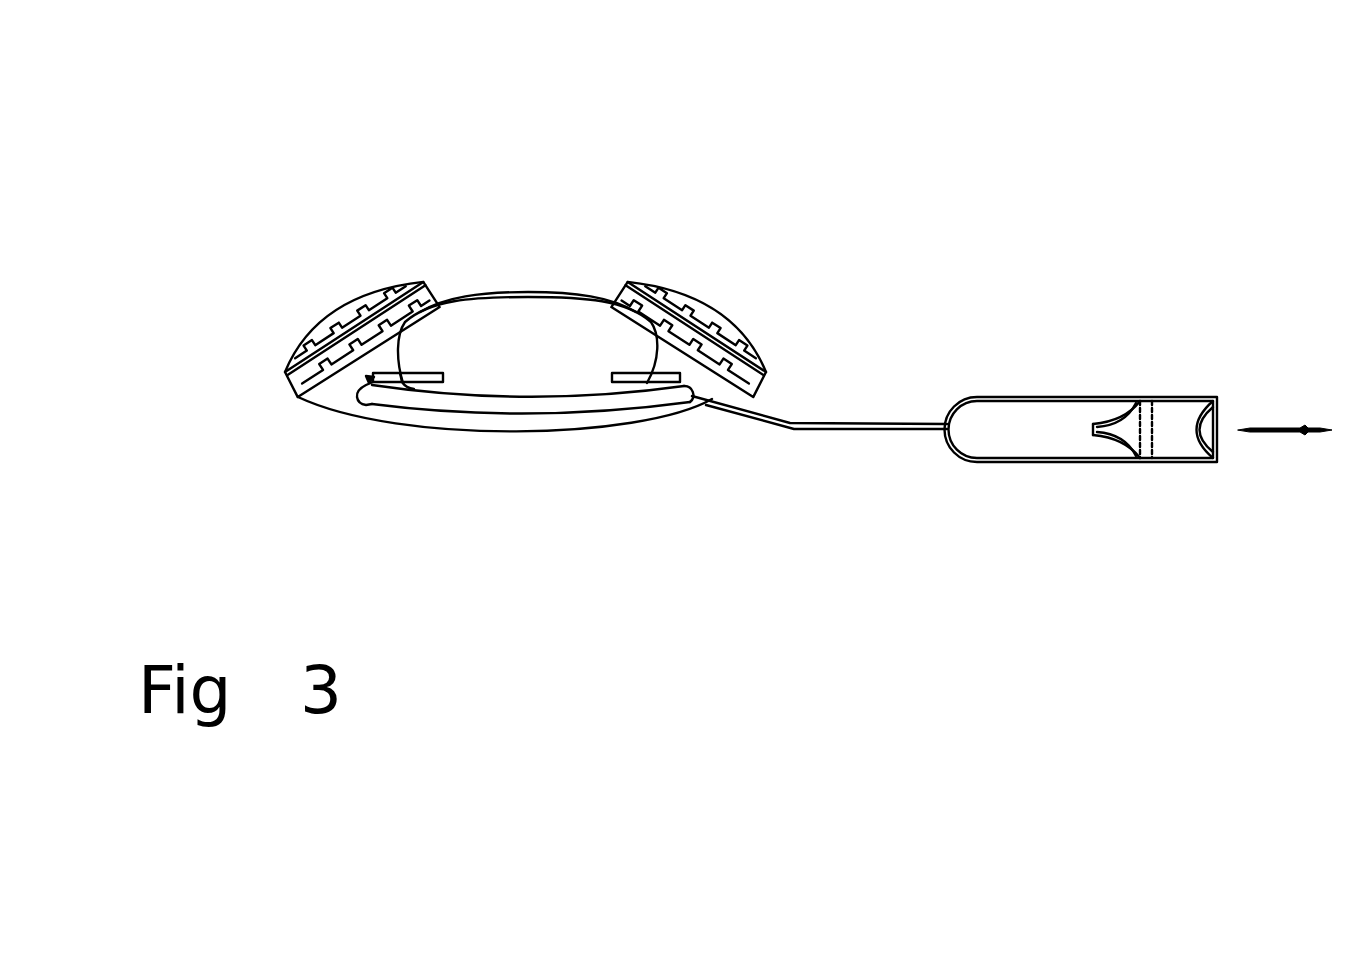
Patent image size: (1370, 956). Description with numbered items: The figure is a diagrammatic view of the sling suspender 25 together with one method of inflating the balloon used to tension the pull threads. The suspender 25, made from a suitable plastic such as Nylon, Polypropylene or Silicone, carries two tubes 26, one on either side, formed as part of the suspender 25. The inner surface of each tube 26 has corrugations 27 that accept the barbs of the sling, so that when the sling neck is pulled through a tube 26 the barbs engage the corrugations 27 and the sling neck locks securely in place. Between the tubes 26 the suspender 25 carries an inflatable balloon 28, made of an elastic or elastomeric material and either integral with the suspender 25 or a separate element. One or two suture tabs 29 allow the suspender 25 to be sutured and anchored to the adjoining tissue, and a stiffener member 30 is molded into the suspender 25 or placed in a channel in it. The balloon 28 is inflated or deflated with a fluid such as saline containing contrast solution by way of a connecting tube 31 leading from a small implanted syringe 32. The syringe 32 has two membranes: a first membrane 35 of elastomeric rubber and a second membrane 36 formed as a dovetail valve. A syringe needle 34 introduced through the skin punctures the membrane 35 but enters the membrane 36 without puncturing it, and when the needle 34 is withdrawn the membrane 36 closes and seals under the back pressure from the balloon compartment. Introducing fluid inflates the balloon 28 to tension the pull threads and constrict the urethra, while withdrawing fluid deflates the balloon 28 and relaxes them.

The sling suspender 25 is at (527, 429).
The tube 26 is at (343, 318).
The corrugations 27 is at (718, 328).
The inflatable balloon 28 is at (527, 297).
The suture tab 29 is at (374, 377).
The stiffener member 30 is at (412, 404).
The connecting tube 31 is at (812, 425).
The implanted syringe 32 is at (1019, 398).
The syringe needle 34 is at (1265, 428).
The first membrane 35 is at (1217, 452).
The membrane 36 is at (1098, 432).